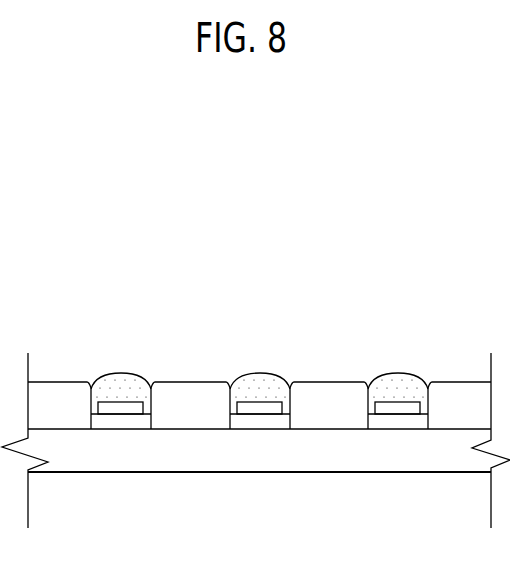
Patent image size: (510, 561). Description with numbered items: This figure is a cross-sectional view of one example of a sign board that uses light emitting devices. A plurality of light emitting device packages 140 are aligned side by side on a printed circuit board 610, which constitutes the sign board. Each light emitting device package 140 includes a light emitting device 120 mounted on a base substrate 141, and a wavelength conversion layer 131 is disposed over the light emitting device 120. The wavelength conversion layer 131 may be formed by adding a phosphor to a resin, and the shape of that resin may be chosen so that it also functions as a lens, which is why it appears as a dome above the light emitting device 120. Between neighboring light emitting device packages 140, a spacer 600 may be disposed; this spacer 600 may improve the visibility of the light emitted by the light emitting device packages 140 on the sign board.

The light emitting device package 140 is at (130, 394).
The wavelength conversion layer 131 is at (107, 387).
The light emitting device 120 is at (132, 408).
The base substrate 141 is at (121, 423).
The spacer 600 is at (328, 392).
The printed circuit board 610 is at (316, 463).